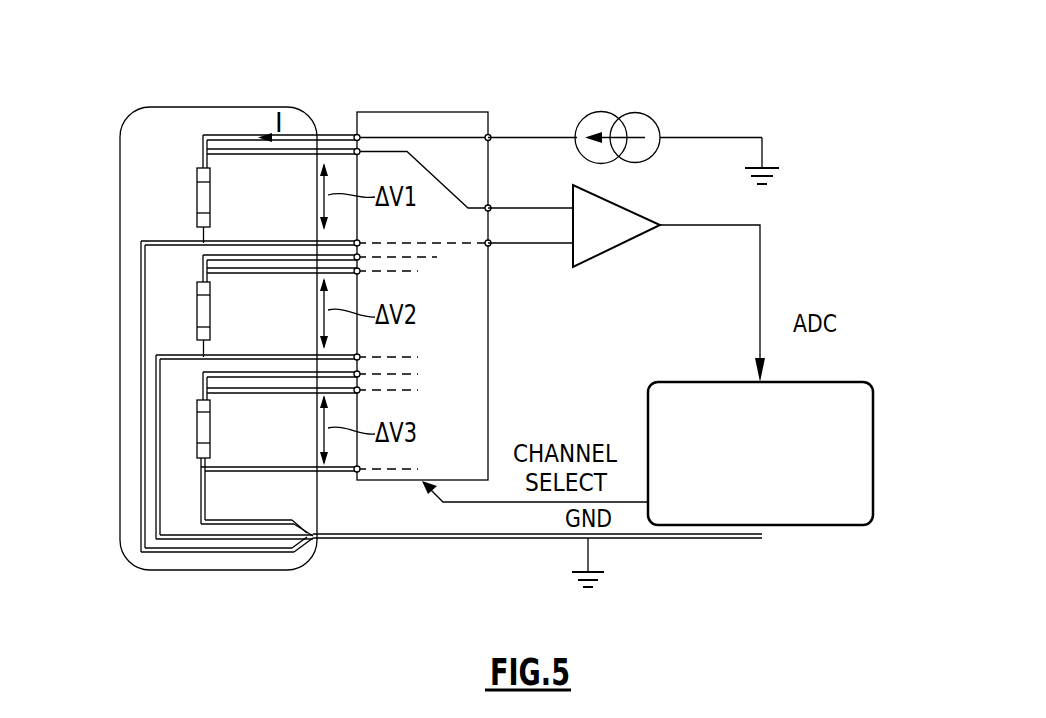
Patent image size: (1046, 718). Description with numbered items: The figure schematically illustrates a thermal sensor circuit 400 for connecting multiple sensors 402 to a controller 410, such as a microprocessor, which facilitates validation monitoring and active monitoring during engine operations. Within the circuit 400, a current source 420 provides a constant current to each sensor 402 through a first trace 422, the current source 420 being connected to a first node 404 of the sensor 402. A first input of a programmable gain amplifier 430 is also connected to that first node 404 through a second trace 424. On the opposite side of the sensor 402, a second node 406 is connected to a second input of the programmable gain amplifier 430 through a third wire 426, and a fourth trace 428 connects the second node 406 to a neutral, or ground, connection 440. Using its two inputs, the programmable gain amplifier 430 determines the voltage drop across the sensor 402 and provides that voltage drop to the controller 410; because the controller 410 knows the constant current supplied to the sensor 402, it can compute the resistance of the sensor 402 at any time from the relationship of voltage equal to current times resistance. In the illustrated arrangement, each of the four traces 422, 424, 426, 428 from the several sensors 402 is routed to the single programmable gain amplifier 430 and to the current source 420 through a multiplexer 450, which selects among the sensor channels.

The circuit 400 is at (139, 66).
The sensor 402 is at (197, 197).
The first node 404 is at (200, 163).
The second node 406 is at (200, 236).
The controller 410 is at (873, 430).
The current source 420 is at (584, 121).
The first trace 422 is at (327, 135).
The second trace 424 is at (248, 153).
The third wire 426 is at (270, 240).
The fourth trace 428 is at (142, 270).
The programmable gain amplifier 430 is at (632, 207).
The ground connection 440 is at (600, 582).
The multiplexer 450 is at (423, 112).